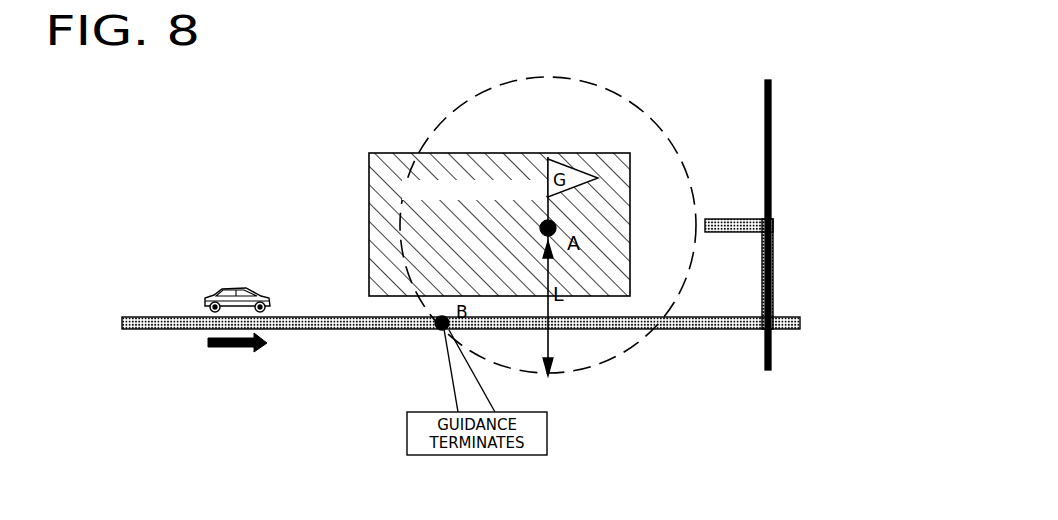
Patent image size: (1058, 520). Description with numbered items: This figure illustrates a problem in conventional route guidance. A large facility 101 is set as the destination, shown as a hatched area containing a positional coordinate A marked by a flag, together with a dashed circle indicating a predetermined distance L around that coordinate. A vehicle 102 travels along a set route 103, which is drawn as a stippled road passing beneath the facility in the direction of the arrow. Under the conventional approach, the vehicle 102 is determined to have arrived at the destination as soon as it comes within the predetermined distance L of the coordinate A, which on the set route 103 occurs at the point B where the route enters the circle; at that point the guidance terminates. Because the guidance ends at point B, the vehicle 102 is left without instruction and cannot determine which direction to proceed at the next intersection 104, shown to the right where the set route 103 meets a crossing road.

The large facility 101 is at (396, 153).
The vehicle 102 is at (238, 287).
The set route 103 is at (370, 330).
The next intersection 104 is at (757, 331).